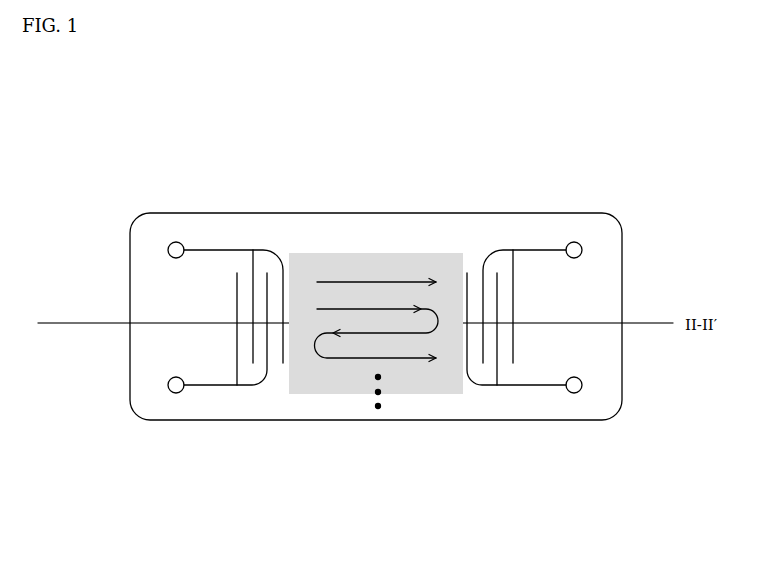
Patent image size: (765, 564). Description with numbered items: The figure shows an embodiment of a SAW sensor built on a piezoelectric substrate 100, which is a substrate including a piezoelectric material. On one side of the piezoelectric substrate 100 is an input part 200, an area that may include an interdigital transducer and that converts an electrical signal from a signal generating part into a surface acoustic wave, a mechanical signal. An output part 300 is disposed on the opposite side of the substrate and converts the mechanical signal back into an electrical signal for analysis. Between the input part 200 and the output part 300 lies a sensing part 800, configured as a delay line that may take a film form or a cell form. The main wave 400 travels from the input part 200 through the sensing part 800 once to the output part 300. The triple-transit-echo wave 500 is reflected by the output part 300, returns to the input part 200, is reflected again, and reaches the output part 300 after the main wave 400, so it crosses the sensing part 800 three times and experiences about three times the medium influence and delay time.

The piezoelectric substrate 100 is at (180, 423).
The input part 200 is at (200, 233).
The output part 300 is at (523, 232).
The main wave 400 is at (381, 272).
The triple-transit-echo wave 500 is at (400, 366).
The sensing part 800 is at (333, 395).